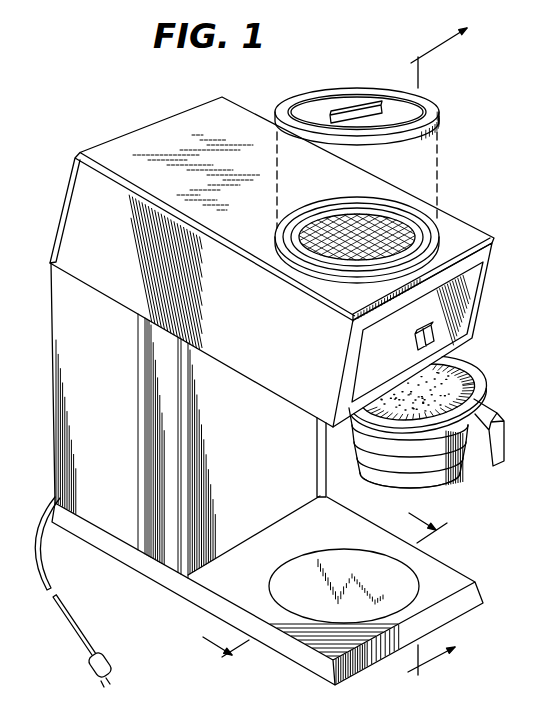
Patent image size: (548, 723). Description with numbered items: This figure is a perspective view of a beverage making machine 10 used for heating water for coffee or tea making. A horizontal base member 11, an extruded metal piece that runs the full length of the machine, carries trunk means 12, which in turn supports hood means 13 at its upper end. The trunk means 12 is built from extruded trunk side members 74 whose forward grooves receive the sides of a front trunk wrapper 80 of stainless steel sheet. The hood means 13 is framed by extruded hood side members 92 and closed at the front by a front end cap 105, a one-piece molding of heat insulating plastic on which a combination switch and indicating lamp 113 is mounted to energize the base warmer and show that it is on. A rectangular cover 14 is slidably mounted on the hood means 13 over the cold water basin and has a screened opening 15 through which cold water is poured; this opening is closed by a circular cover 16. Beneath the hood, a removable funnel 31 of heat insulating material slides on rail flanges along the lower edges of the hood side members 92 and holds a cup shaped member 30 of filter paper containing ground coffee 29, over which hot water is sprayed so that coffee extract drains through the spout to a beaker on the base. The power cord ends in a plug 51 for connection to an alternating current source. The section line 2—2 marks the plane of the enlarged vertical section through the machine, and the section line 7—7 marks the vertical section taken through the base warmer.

The beverage making machine 10 is at (110, 106).
The horizontal base member 11 is at (476, 560).
The trunk means 12 is at (48, 360).
The hood means 13 is at (52, 167).
The rectangular cover 14 is at (167, 130).
The screened opening 15 is at (412, 232).
The circular cover 16 is at (431, 107).
The ground coffee 29 is at (463, 378).
The cup shaped member of filter paper 30 is at (476, 391).
The removable funnel 31 is at (458, 470).
The plug 51 is at (110, 663).
The trunk side members 74 is at (323, 483).
The front trunk wrapper 80 is at (268, 486).
The hood side members 92 is at (262, 321).
The front end cap 105 is at (392, 358).
The combination switch and indicating lamp 113 is at (425, 328).
The section line 2— 2 is at (437, 364).
The section line 7— 7 is at (333, 595).